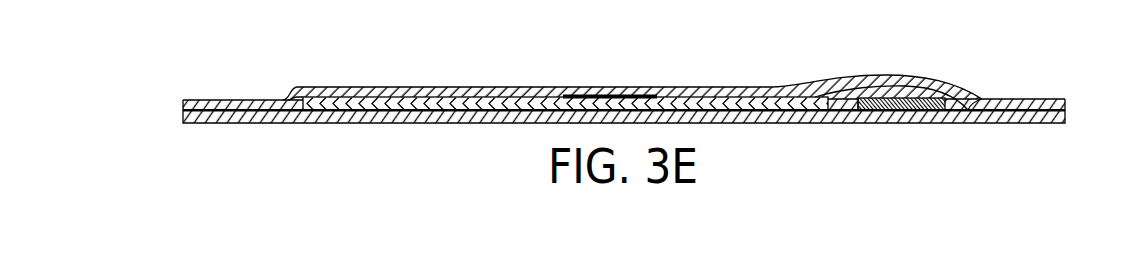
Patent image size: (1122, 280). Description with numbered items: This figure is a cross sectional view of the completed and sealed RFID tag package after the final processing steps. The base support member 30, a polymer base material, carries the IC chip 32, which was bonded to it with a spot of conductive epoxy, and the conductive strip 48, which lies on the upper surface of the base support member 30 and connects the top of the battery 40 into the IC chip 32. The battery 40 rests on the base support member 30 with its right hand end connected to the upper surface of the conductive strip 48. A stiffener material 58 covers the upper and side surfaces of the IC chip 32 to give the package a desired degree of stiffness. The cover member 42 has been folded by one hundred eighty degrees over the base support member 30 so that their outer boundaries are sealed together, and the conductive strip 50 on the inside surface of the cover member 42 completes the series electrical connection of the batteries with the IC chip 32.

The base support member 30 is at (978, 118).
The IC chip 32 is at (903, 82).
The battery 40 is at (442, 105).
The cover member 42 is at (518, 97).
The conductive strip 48 is at (806, 100).
The conductive strip 50 is at (613, 91).
The stiffener material 58 is at (968, 108).